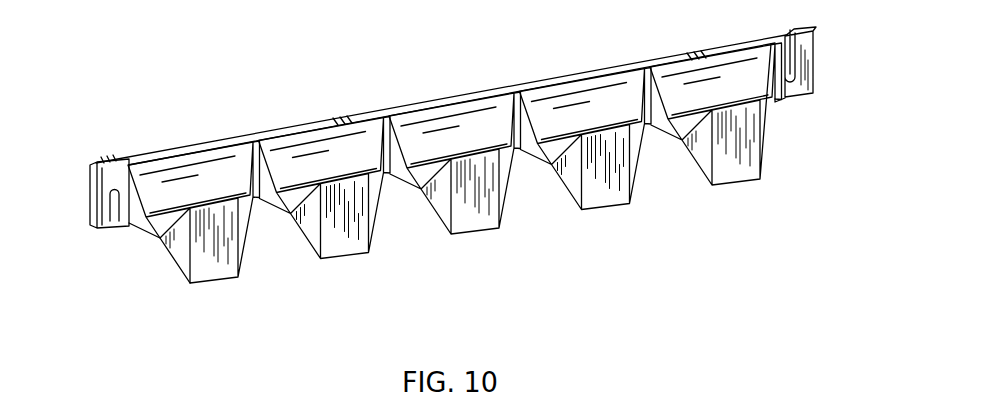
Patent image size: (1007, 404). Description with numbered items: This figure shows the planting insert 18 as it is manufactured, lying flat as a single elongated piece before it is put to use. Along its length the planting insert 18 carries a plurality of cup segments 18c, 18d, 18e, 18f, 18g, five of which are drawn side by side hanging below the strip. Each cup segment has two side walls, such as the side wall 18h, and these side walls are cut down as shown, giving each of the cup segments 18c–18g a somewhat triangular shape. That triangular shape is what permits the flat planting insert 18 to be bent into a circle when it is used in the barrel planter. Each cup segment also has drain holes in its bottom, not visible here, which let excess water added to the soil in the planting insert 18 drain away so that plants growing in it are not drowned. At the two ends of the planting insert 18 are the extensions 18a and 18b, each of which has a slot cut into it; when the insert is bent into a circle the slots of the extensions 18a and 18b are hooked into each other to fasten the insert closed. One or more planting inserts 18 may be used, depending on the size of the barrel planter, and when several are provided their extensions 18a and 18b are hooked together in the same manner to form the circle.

The planting insert 18 is at (375, 43).
The extension 18a is at (90, 162).
The extension 18b is at (815, 68).
The cup segment 18c is at (213, 281).
The cup segment 18d is at (347, 257).
The cup segment 18e is at (477, 232).
The cup segment 18f is at (603, 210).
The cup segment 18g is at (747, 181).
The side wall 18h is at (165, 263).